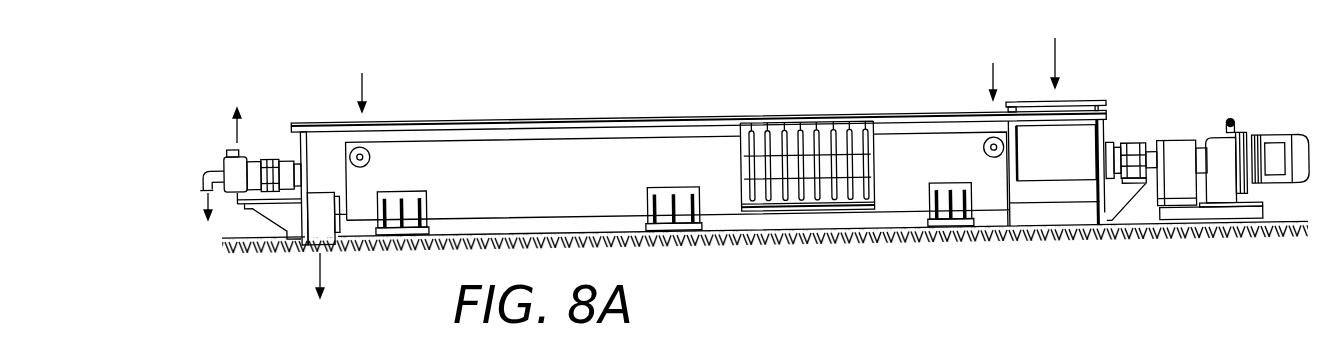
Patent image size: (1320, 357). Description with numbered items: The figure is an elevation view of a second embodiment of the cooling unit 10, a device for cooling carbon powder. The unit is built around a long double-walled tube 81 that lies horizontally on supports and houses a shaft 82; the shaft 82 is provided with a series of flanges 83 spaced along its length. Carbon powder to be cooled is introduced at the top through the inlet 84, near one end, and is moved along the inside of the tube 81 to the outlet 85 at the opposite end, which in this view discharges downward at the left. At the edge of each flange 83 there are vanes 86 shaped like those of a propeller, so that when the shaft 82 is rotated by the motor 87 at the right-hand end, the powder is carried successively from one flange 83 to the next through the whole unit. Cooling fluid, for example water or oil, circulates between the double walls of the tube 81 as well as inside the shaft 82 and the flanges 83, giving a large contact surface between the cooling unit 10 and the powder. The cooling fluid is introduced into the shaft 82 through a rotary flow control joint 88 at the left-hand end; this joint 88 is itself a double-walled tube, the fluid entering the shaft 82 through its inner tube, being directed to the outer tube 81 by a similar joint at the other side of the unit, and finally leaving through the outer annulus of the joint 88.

The cooling unit 10 is at (667, 106).
The double-walled tube 81 is at (827, 181).
The shaft 82 is at (808, 140).
The flanges 83 is at (842, 137).
The inlet 84 is at (1080, 100).
The outlet 85 is at (330, 246).
The vanes 86 is at (793, 130).
The motor 87 is at (1267, 136).
The rotary flow control joint 88 is at (238, 170).